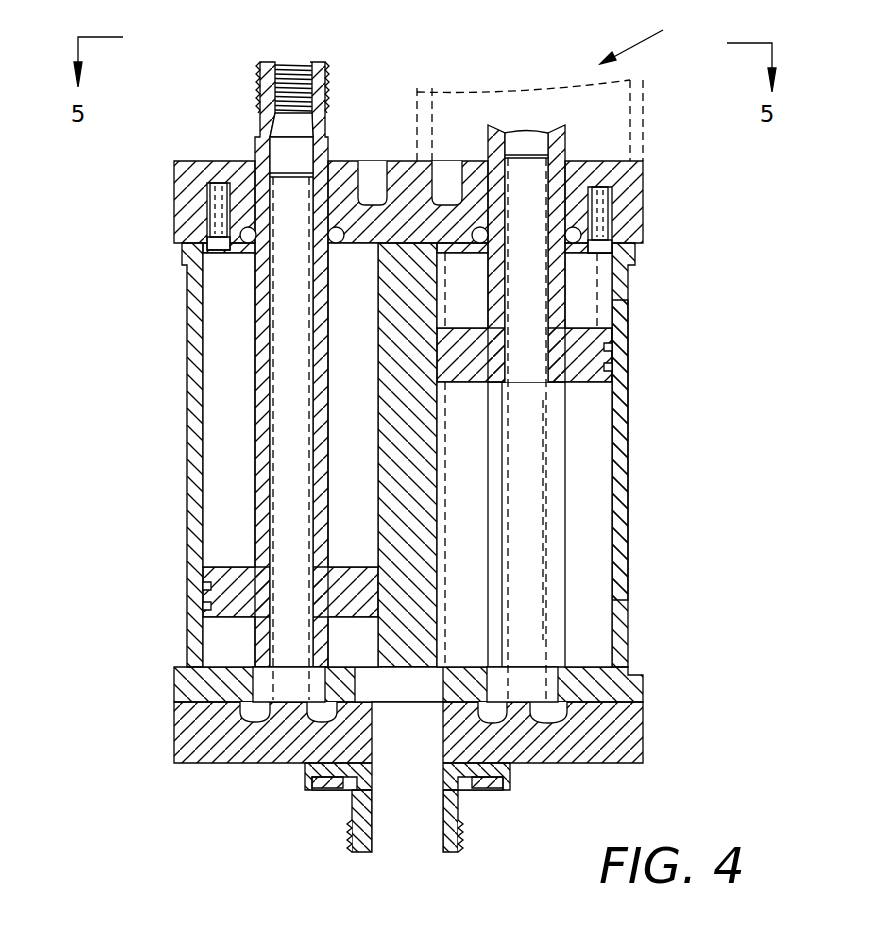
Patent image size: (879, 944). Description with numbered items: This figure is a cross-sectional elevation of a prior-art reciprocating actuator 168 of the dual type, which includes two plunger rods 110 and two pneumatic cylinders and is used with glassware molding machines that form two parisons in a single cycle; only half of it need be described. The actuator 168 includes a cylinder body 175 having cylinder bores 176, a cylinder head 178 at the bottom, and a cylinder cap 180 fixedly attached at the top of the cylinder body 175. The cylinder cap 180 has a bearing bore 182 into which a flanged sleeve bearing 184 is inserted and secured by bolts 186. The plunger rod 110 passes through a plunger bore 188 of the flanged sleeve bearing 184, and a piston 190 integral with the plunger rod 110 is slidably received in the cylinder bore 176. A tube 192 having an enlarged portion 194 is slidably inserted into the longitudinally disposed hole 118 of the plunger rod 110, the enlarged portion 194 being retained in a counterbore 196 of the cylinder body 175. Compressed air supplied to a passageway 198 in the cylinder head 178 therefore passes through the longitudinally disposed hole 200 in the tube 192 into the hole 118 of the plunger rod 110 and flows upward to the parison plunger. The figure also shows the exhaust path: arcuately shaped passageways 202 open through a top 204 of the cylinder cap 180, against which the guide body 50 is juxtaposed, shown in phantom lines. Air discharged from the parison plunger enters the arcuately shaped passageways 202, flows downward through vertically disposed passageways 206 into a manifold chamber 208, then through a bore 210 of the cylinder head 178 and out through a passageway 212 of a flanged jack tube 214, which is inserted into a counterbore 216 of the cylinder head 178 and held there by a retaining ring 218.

The guide body 50 is at (645, 100).
The plunger rod 110 is at (260, 92).
The longitudinally disposed hole 118 is at (270, 300).
The reciprocating actuator 168 is at (637, 37).
The cylinder body 175 is at (633, 498).
The cylinder bore 176 is at (610, 515).
The cylinder head 178 is at (648, 745).
The cylinder cap 180 is at (643, 190).
The bearing bore 182 is at (568, 162).
The flanged sleeve bearing 184 is at (643, 208).
The bolt 186 is at (597, 255).
The plunger bore 188 is at (272, 157).
The piston 190 is at (598, 385).
The tube 192 is at (552, 437).
The enlarged portion 194 is at (620, 673).
The counterbore 196 is at (425, 745).
The passageway 198 is at (533, 710).
The longitudinally disposed hole 200 is at (543, 545).
The arcuately shaped passageway 202 is at (443, 163).
The top 204 is at (407, 162).
The vertically disposed passageway 206 is at (445, 437).
The manifold chamber 208 is at (373, 683).
The bore 210 is at (518, 765).
The passageway 212 is at (460, 822).
The flanged jack tube 214 is at (458, 842).
The counterbore 216 is at (334, 792).
The retaining ring 218 is at (310, 782).